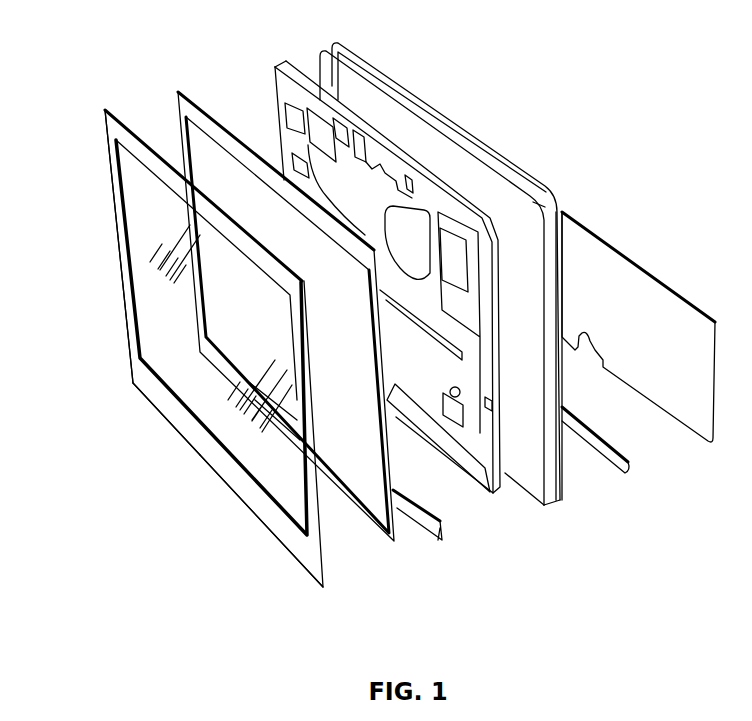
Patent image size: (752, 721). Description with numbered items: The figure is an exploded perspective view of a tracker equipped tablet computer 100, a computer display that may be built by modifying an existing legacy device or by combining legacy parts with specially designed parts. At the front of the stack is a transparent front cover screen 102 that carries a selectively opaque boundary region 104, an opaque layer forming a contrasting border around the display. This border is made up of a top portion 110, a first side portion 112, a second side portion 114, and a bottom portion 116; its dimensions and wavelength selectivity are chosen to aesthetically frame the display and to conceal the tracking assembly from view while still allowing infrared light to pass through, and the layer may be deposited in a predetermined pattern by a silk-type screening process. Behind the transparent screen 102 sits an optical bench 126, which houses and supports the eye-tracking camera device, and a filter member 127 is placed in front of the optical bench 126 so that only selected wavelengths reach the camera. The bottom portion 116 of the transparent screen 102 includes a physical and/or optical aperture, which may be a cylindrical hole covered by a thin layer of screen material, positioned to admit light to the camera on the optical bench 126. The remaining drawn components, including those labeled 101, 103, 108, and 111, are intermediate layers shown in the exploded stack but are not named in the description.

The tracker equipped tablet computer 100 is at (95, 78).
The slot opening 101 is at (362, 132).
The transparent front cover screen 102 is at (138, 234).
The display panel 103 is at (286, 333).
The selectively opaque boundary region 104 is at (175, 331).
The back plate 108 is at (575, 415).
The top portion 110 is at (125, 116).
The display panel frame 111 is at (208, 118).
The first side portion 112 is at (125, 318).
The second side portion 114 is at (312, 555).
The bottom portion 116 is at (183, 420).
The optical bench 126 is at (617, 477).
The filter member 127 is at (433, 532).